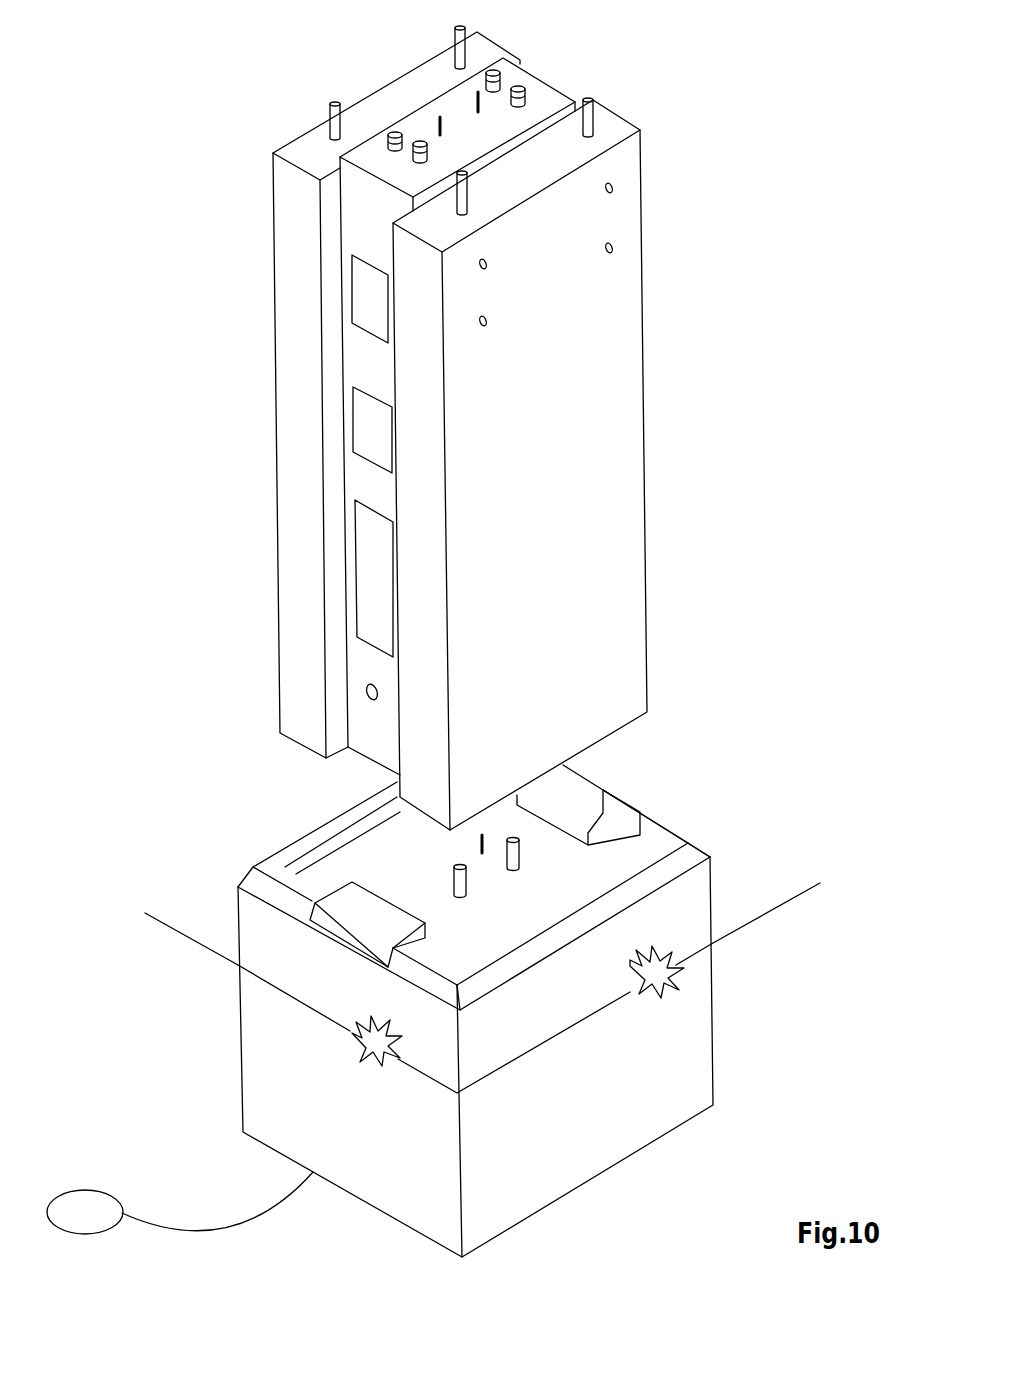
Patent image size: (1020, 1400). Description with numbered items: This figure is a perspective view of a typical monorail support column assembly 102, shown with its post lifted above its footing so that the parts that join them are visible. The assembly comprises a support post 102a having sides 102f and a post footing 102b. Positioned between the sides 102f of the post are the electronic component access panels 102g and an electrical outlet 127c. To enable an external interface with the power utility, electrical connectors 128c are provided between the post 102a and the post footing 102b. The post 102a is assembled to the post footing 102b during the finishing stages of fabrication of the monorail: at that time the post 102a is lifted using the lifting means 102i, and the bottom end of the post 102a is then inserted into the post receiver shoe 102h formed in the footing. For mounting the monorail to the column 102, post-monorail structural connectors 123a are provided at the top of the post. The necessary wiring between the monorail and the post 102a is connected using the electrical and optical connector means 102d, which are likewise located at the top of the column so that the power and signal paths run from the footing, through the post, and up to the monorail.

The support column assembly 102 is at (153, 542).
The support post 102a is at (436, 392).
The post footing 102b is at (452, 988).
The electrical and optical connector means 102d is at (412, 123).
The sides 102f is at (592, 465).
The electronic component access panels 102g is at (383, 435).
The post receiver shoe 102h is at (632, 835).
The lifting means 102i is at (614, 248).
The post-monorail structural connectors 123a is at (328, 110).
The electrical outlet 127c is at (366, 692).
The electrical connectors 128c is at (517, 838).